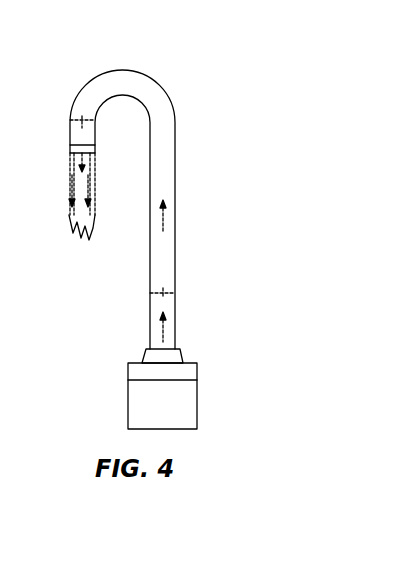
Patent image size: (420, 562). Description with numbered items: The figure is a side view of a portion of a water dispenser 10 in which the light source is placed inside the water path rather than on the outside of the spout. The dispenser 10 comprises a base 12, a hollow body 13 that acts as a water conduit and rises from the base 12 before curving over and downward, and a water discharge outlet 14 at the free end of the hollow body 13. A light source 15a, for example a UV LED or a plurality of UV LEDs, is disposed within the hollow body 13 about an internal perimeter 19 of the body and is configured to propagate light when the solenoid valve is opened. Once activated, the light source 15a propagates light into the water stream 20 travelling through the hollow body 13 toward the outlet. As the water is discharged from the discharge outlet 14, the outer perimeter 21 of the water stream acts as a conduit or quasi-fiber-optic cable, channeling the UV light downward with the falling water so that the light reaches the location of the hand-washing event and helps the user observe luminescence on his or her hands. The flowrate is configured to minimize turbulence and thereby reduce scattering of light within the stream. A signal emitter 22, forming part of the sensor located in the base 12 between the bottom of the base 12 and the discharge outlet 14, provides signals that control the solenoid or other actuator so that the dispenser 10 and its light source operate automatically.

The water dispenser 10 is at (204, 156).
The base 12 is at (186, 401).
The hollow body 13 is at (164, 110).
The water discharge outlet 14 is at (72, 150).
The light source 15a is at (89, 118).
The internal perimeter 19 is at (77, 116).
The water stream 20 is at (165, 215).
The outer perimeter 21 is at (68, 182).
The signal emitter 22 is at (92, 200).